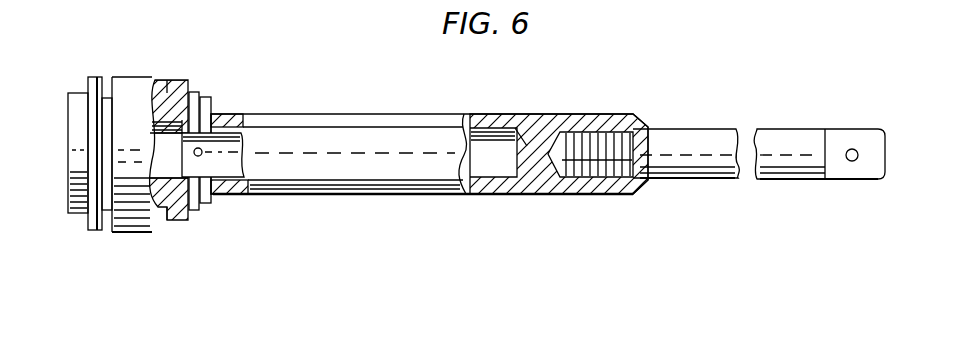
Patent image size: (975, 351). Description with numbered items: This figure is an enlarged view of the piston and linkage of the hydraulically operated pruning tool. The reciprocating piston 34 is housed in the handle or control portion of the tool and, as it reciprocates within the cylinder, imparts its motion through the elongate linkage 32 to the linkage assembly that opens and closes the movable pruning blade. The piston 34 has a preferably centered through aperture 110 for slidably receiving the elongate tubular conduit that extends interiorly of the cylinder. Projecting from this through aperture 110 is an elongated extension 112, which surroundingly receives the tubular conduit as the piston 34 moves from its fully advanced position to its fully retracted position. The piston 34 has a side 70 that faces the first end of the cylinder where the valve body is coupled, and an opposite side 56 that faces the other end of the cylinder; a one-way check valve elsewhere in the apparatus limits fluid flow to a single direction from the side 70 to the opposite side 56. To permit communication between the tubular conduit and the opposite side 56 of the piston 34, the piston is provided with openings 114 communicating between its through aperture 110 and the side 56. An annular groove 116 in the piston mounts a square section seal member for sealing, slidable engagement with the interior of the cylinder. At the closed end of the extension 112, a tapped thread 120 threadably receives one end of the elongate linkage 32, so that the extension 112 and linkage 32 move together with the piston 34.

The side of the piston 70 is at (67, 112).
The annular groove 116 is at (110, 88).
The through aperture 110 is at (175, 80).
The openings 114 is at (203, 100).
The opposite side of the piston 56 is at (215, 201).
The elongated extension 112 is at (347, 137).
The reciprocating piston 34 is at (333, 207).
The tapped thread 120 is at (602, 140).
The elongate linkage 32 is at (733, 135).